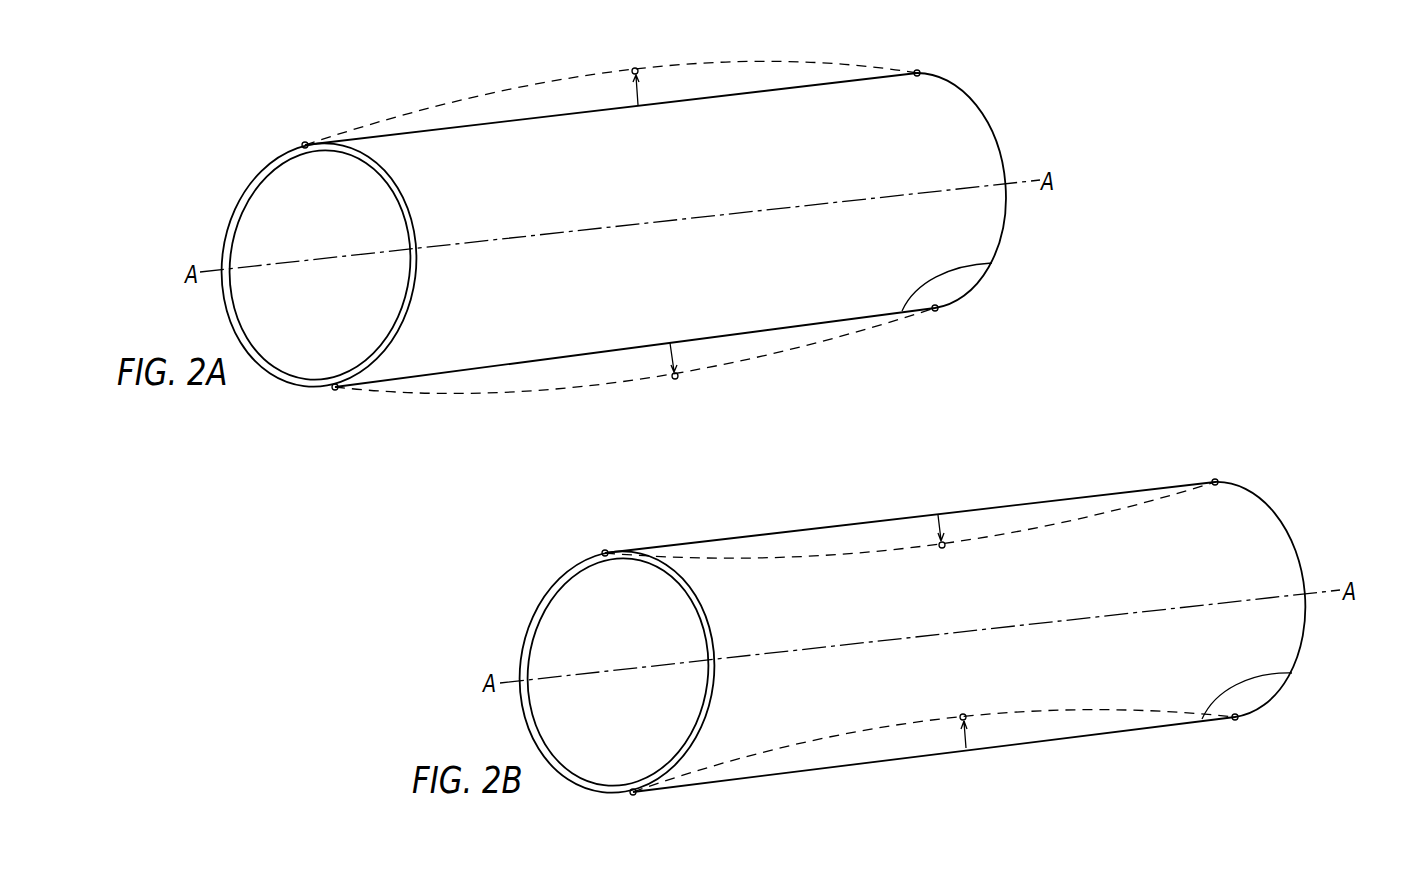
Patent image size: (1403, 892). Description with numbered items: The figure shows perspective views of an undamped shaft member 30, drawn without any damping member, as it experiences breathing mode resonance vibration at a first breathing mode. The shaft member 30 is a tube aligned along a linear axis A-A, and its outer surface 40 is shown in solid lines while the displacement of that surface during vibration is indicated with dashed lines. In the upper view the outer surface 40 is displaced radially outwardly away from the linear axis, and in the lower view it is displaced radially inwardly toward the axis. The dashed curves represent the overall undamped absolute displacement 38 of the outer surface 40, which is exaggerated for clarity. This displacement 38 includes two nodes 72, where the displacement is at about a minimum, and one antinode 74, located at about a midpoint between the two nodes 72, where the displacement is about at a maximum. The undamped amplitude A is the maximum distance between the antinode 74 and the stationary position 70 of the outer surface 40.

In FIG. 2A, the shaft member 30 is at (249, 178).
In FIG. 2B, the shaft member 30 is at (548, 590).
In FIG. 2A, the outer surface 40 is at (359, 137).
In FIG. 2B, the outer surface 40 is at (658, 545).
In FIG. 2A, the overall undamped absolute displacement 38 is at (800, 63).
In FIG. 2B, the overall undamped absolute displacement 38 is at (1100, 517).
In FIG. 2A, the stationary position 70 is at (990, 265).
In FIG. 2B, the stationary position 70 is at (1290, 673).
In FIG. 2A, the nodes 72 is at (306, 148).
In FIG. 2B, the nodes 72 is at (607, 557).
In FIG. 2A, the antinode 74 is at (636, 68).
In FIG. 2B, the antinode 74 is at (945, 548).